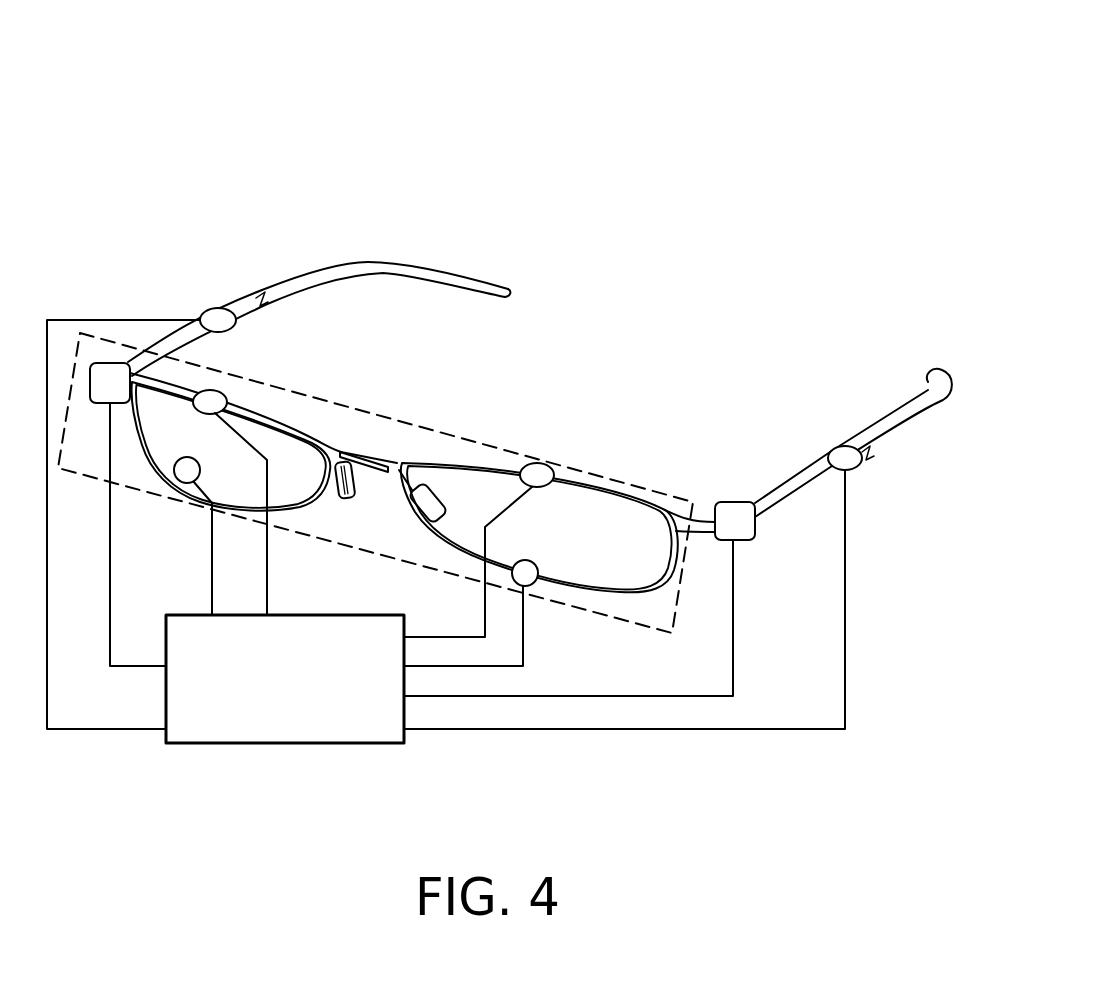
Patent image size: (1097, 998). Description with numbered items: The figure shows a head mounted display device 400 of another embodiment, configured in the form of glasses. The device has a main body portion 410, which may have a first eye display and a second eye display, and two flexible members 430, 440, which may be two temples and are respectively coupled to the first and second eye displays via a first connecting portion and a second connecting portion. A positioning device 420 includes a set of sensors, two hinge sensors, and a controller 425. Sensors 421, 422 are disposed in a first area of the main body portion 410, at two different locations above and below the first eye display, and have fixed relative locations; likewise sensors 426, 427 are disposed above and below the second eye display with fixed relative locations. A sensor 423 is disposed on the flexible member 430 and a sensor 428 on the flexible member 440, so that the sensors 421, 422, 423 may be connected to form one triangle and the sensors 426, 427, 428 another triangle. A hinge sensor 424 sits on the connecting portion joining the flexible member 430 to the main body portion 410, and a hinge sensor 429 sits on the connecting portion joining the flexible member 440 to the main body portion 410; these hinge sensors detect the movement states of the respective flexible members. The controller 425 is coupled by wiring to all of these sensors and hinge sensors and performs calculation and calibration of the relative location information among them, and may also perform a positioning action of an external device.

The head mounted display device 400 is at (915, 797).
The main body portion 410 is at (383, 415).
The positioning device 420 is at (746, 12).
The sensor 421 is at (225, 392).
The sensor 422 is at (187, 457).
The sensor 423 is at (218, 308).
The hinge sensor 424 is at (107, 363).
The controller 425 is at (340, 744).
The sensor 426 is at (545, 465).
The sensor 427 is at (534, 562).
The sensor 428 is at (857, 470).
The hinge sensor 429 is at (745, 542).
The flexible member 430 is at (447, 270).
The flexible member 440 is at (920, 425).